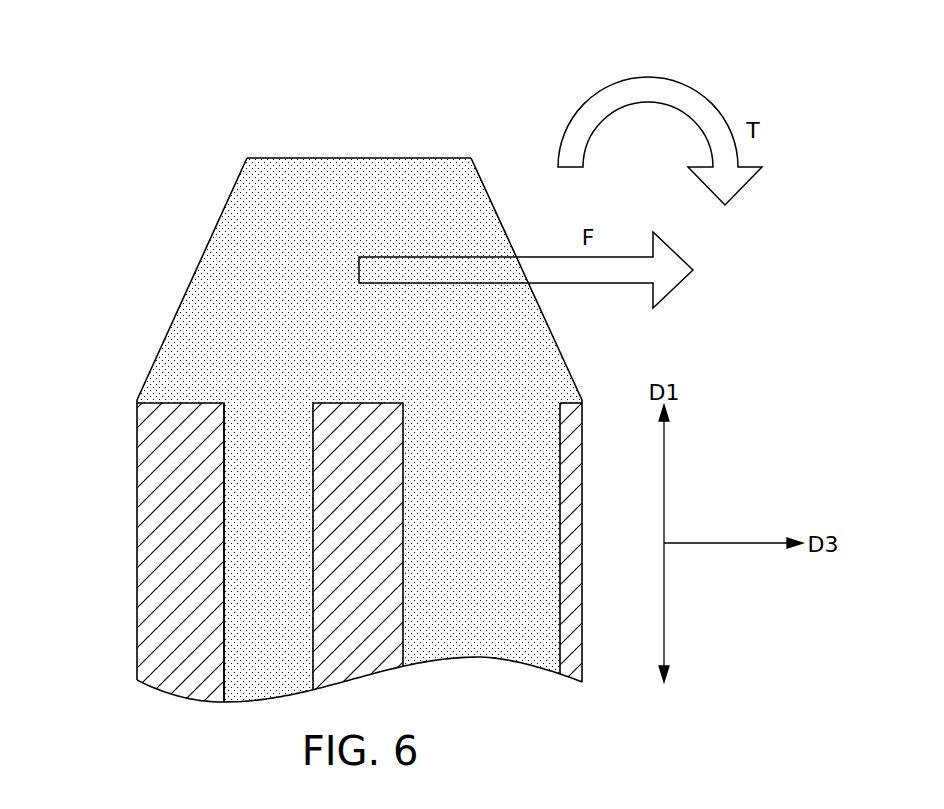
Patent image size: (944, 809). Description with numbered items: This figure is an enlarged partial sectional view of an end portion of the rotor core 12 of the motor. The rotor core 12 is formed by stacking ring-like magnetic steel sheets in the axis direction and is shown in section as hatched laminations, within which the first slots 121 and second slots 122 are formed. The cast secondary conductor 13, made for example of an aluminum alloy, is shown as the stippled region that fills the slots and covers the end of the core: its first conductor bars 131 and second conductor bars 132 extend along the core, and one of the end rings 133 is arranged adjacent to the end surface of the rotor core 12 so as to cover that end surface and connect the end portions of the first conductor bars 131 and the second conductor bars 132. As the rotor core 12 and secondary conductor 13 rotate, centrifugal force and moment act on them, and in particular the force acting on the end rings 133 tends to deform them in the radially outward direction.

The rotor core 12 is at (137, 605).
The first slot 121 is at (385, 520).
The second slot 122 is at (228, 447).
The secondary conductor 13 is at (197, 87).
The first conductor bar 131 is at (470, 480).
The second conductor bar 132 is at (275, 440).
The end ring 133 is at (358, 158).